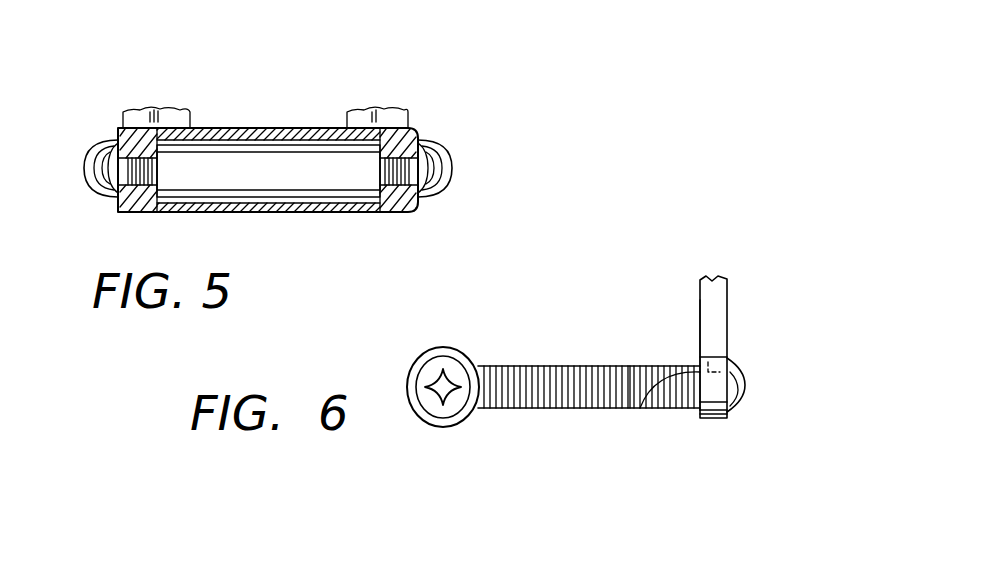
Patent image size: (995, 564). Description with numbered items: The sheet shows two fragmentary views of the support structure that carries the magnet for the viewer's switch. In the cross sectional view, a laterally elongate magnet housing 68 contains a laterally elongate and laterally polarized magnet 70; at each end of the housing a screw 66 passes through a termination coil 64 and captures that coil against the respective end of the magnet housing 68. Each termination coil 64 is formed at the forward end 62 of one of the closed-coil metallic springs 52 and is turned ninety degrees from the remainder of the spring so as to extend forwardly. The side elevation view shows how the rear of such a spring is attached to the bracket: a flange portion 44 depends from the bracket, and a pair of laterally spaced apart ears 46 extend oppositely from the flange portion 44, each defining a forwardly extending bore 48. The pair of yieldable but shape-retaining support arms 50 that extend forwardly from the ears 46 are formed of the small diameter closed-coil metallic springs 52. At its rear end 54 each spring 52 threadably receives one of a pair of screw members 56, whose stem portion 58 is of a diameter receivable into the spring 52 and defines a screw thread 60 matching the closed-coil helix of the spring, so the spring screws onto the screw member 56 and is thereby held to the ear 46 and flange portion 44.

In FIG. 5, the flange portion 44 is at (152, 110).
In FIG. 6, the flange portion 44 is at (727, 290).
In FIG. 6, the ears 46 is at (715, 420).
In FIG. 6, the bores 48 is at (722, 350).
In FIG. 6, the support arms 50 is at (563, 348).
In FIG. 5, the closed-coil metallic springs 52 is at (95, 150).
In FIG. 6, the closed-coil metallic springs 52 is at (558, 412).
In FIG. 6, the rear ends 54 is at (665, 365).
In FIG. 6, the screw members 56 is at (735, 380).
In FIG. 6, the stem portion 58 is at (666, 404).
In FIG. 6, the screw thread 60 is at (656, 366).
In FIG. 6, the forward end 62 is at (512, 365).
In FIG. 5, the termination coil 64 is at (118, 200).
In FIG. 5, the screw 66 is at (108, 145).
In FIG. 5, the magnet housing 68 is at (240, 128).
In FIG. 5, the magnet 70 is at (323, 172).